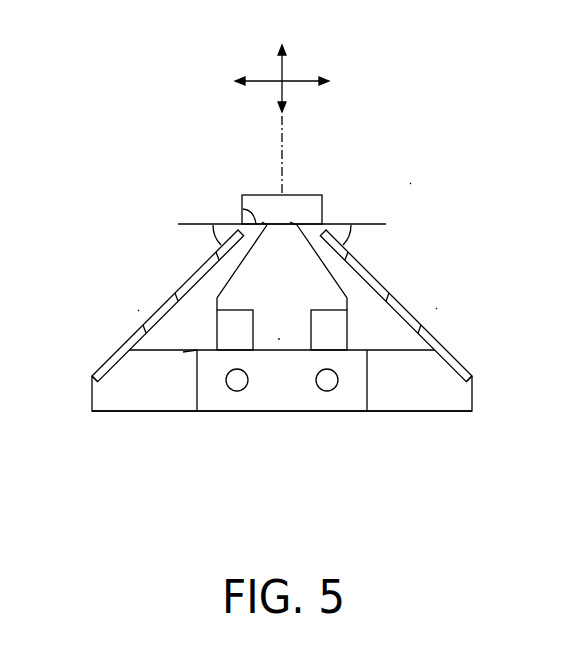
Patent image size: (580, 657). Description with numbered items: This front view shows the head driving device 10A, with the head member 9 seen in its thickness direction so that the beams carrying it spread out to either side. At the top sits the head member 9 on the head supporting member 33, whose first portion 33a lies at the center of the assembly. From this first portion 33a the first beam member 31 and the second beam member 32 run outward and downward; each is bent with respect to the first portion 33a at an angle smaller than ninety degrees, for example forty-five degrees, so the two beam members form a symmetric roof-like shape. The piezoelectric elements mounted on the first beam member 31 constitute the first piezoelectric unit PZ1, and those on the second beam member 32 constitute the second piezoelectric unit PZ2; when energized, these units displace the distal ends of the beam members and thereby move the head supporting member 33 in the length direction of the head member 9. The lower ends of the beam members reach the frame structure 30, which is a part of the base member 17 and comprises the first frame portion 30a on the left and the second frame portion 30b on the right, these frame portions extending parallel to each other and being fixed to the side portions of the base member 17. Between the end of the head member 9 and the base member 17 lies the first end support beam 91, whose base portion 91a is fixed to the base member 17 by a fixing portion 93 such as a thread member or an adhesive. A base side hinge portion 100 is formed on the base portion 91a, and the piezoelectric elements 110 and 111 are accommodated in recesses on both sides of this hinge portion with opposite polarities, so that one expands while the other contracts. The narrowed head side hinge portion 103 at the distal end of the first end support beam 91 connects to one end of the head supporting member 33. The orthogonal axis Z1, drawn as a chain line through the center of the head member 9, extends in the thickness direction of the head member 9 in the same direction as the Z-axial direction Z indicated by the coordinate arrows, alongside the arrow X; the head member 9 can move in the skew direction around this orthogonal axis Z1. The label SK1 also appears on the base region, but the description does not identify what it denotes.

The head member 9 is at (308, 209).
The head driving device 10A is at (412, 181).
The base member 17 is at (423, 397).
The frame structure 30 is at (94, 366).
The first frame portion 30a is at (110, 356).
The second frame portion 30b is at (456, 358).
The first beam member 31 is at (196, 270).
The second beam member 32 is at (370, 273).
The head supporting member 33 is at (262, 221).
The first portion of head supporting member 33a is at (250, 214).
The first end support beam 91 is at (214, 297).
The base portion of first end support beam 91a is at (317, 306).
The fixing portion 93 is at (237, 391).
The base side hinge portion 100 is at (279, 340).
The head side hinge portion 103 is at (283, 221).
The piezoelectric element 110 is at (325, 330).
The piezoelectric element 111 is at (238, 330).
The gap SK1 is at (209, 335).
The first piezoelectric unit PZ1 is at (136, 309).
The second piezoelectric unit PZ2 is at (439, 307).
The X axis X is at (265, 81).
The Z-axial direction Z is at (284, 72).
The orthogonal axis Z1 is at (283, 152).